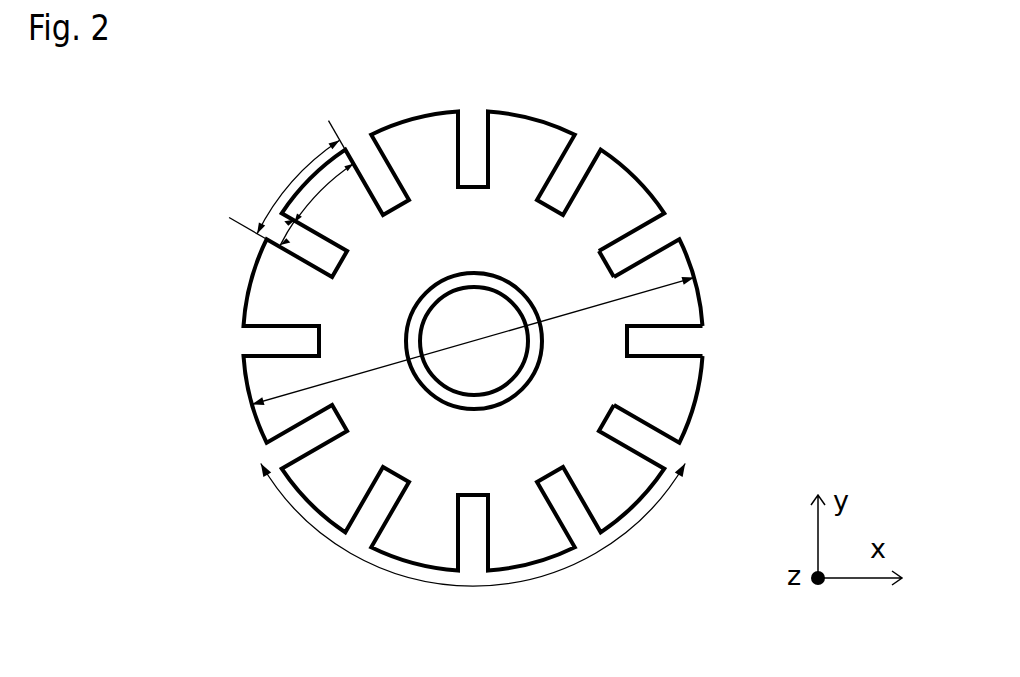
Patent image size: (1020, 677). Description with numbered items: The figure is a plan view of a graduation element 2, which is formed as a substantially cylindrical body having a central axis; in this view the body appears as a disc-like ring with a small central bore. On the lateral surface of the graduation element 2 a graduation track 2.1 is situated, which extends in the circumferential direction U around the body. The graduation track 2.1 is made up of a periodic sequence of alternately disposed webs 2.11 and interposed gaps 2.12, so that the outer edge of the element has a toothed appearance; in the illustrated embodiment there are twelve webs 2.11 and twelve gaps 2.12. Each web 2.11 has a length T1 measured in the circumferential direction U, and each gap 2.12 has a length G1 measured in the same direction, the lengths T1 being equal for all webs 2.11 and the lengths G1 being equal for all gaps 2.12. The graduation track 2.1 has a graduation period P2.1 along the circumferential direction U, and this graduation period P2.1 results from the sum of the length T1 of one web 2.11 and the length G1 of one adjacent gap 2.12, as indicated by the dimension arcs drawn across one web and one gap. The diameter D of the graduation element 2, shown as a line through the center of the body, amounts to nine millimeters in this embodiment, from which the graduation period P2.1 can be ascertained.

The graduation element 2 is at (484, 238).
The graduation track 2.1 is at (685, 223).
The web 2.11 is at (690, 398).
The gap 2.12 is at (688, 339).
The graduation period P2.1 is at (289, 180).
The length of web T1 is at (318, 197).
The length of gap G1 is at (283, 240).
The diameter D is at (473, 338).
The circumferential direction U is at (475, 524).